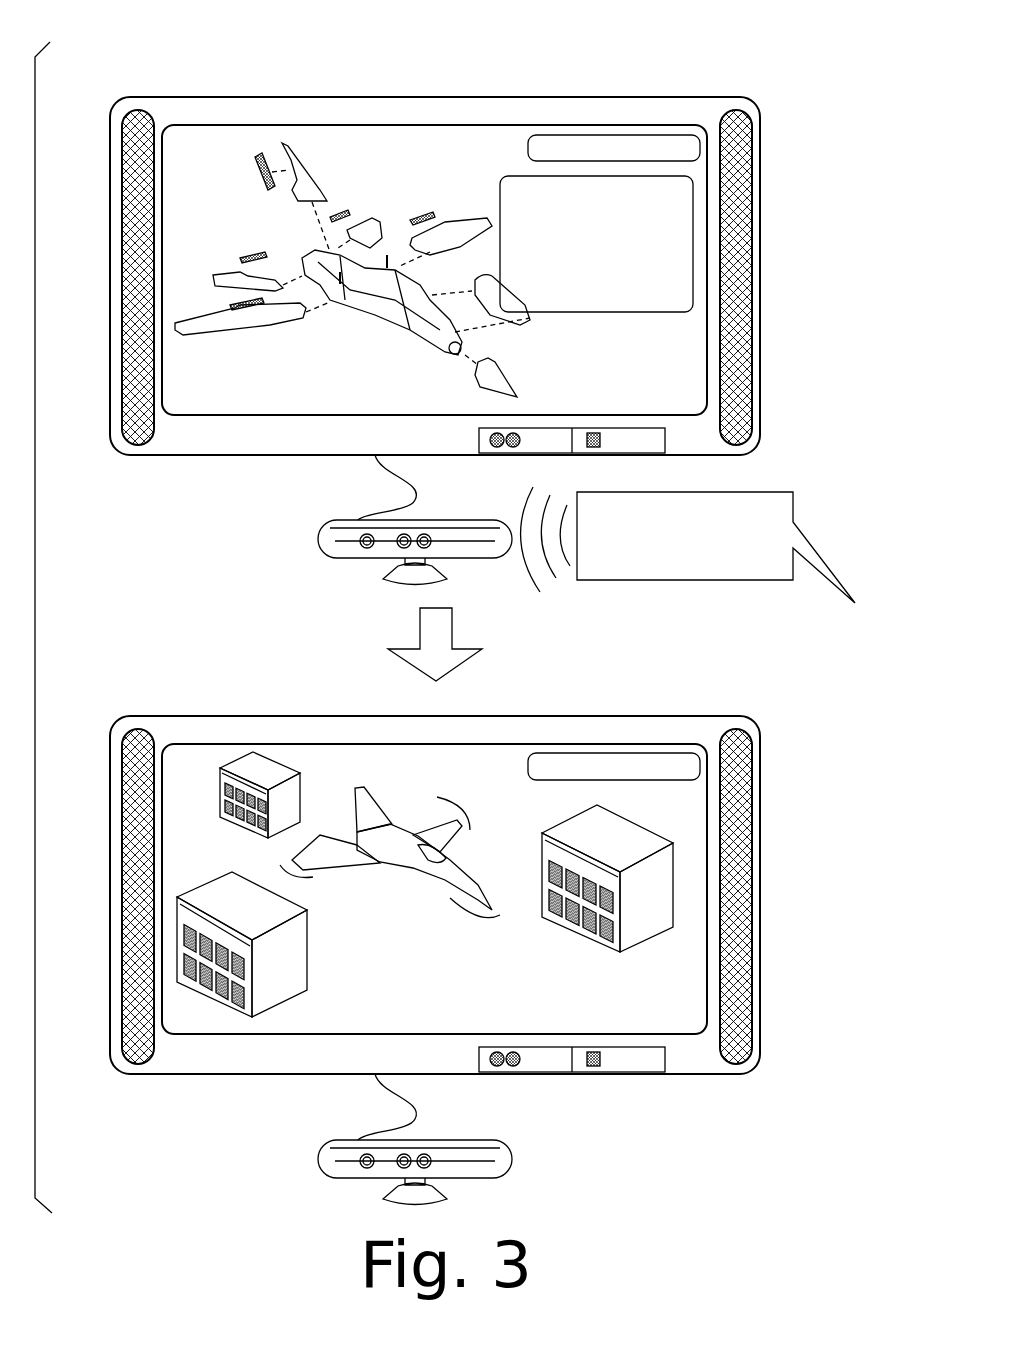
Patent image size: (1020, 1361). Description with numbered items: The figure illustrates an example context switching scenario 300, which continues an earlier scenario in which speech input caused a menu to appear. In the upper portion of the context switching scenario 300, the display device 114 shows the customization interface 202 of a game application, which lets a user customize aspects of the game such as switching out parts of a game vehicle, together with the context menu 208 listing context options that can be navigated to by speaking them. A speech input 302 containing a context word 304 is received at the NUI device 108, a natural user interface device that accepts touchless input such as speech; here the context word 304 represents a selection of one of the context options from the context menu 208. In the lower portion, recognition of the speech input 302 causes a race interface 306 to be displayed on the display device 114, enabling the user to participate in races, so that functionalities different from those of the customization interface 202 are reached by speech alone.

The context switching scenario 300 is at (167, 72).
The display device 114 is at (126, 96).
The natural user interface (NUI) device 108 is at (418, 530).
The customization interface 202 is at (693, 398).
The context menu 208 is at (500, 176).
The speech input 302 is at (716, 533).
The context word 304 is at (695, 525).
The race interface 306 is at (693, 1017).